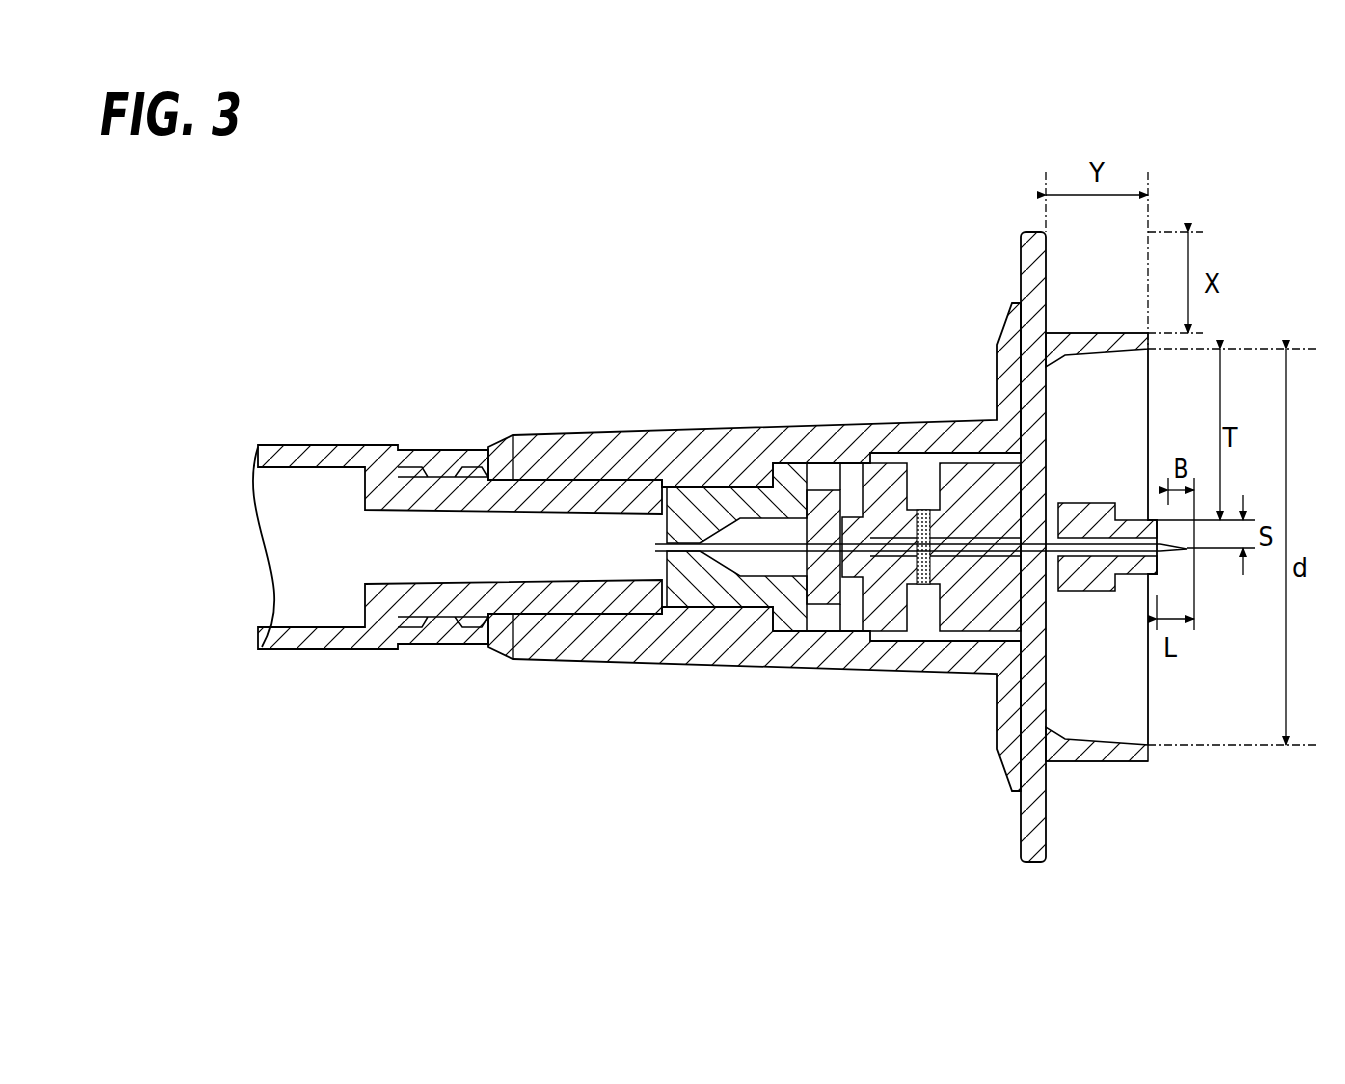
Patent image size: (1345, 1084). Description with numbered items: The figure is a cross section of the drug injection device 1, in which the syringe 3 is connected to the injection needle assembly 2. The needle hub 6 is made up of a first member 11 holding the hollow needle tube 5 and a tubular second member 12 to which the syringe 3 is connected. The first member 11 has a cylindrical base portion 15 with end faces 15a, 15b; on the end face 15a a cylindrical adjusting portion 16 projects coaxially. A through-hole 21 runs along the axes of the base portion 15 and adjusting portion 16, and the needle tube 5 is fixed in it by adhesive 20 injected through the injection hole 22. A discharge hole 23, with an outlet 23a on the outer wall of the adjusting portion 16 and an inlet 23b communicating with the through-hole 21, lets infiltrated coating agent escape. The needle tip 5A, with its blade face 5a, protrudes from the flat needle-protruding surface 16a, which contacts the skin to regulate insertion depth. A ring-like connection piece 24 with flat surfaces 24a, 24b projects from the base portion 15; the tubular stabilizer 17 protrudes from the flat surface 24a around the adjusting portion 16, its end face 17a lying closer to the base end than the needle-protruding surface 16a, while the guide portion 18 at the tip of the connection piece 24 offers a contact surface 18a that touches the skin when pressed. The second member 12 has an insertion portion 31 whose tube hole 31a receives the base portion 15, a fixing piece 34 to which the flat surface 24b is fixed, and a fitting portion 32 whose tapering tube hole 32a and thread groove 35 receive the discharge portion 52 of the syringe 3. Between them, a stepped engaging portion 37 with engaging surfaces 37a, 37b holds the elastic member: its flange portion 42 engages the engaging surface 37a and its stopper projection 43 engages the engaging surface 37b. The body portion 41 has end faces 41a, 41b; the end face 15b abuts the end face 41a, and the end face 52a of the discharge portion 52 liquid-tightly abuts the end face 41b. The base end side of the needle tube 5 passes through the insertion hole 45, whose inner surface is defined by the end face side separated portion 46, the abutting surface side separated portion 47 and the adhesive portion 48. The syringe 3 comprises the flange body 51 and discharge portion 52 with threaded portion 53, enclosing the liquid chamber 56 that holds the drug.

The drug injection device 1 is at (1222, 175).
The injection needle assembly 2 is at (747, 282).
The syringe 3 is at (327, 418).
The needle tube 5 is at (977, 510).
The blade face 5a is at (1188, 548).
The needle tip 5A is at (1177, 556).
The needle hub 6 is at (996, 792).
The first member 11 is at (1140, 825).
The second member 12 is at (650, 720).
The base portion 15 is at (962, 612).
The end face 15a is at (1050, 457).
The end face 15b is at (812, 612).
The adjusting portion 16 is at (1120, 600).
The needle-protruding surface 16a is at (1150, 505).
The stabilizer 17 is at (1118, 763).
The end face 17a is at (1150, 761).
The guide portion 18 is at (1028, 232).
The contact surface 18a is at (1050, 282).
The adhesive 20 is at (927, 572).
The through-hole 21 is at (1125, 570).
The injection hole 22 is at (922, 600).
The discharge hole 23 is at (1062, 592).
The outlet 23a is at (1060, 502).
The inlet 23b is at (1056, 580).
The connection piece 24 is at (1047, 387).
The flat surface 24a is at (1048, 714).
The flat surface 24b is at (1005, 730).
The insertion portion 31 is at (870, 433).
The tube hole 31a is at (912, 457).
The fitting portion 32 is at (538, 445).
The tube hole 32a is at (548, 612).
The fixing piece 34 is at (1008, 320).
The thread groove 35 is at (492, 632).
The engaging portion 37 is at (708, 493).
The engaging surface 37a is at (783, 473).
The engaging surface 37b is at (658, 484).
The body portion 41 is at (720, 600).
The end face 41a is at (833, 470).
The end face 41b is at (645, 600).
The flange portion 42 is at (777, 640).
The stopper projection 43 is at (652, 600).
The insertion hole 45 is at (762, 568).
The end face side separated portion 46 is at (760, 520).
The abutting surface side separated portion 47 is at (655, 540).
The adhesive portion 48 is at (693, 578).
The flange body 51 is at (272, 447).
The discharge portion 52 is at (594, 488).
The end face 52a is at (705, 468).
The threaded portion 53 is at (468, 462).
The liquid chamber 56 is at (318, 600).